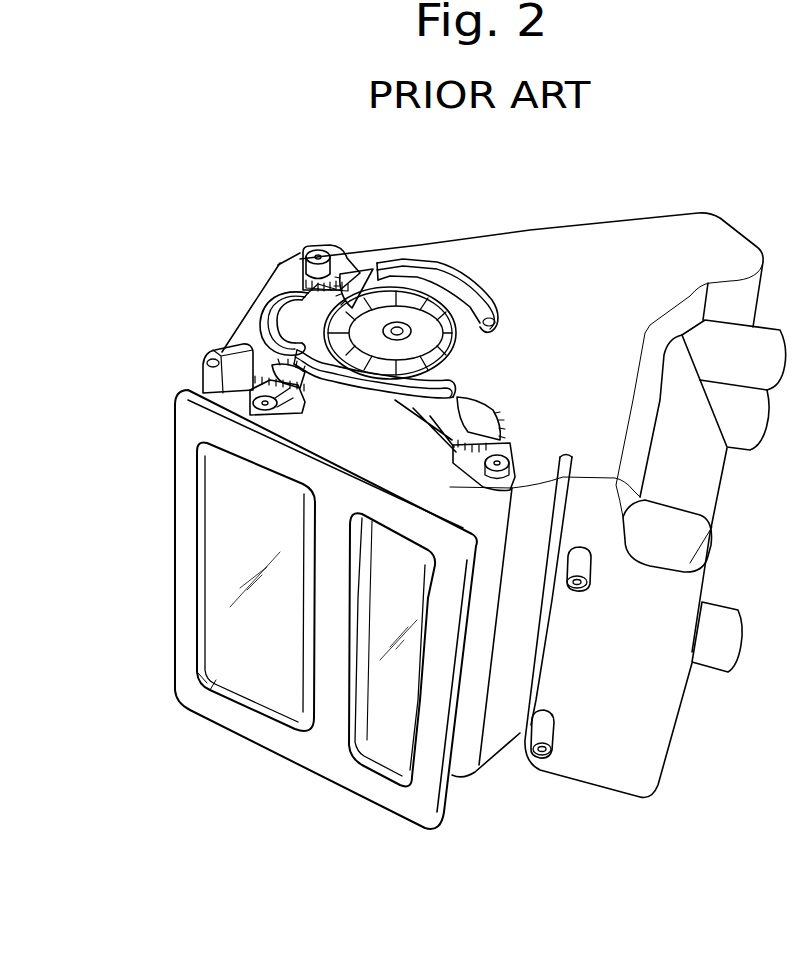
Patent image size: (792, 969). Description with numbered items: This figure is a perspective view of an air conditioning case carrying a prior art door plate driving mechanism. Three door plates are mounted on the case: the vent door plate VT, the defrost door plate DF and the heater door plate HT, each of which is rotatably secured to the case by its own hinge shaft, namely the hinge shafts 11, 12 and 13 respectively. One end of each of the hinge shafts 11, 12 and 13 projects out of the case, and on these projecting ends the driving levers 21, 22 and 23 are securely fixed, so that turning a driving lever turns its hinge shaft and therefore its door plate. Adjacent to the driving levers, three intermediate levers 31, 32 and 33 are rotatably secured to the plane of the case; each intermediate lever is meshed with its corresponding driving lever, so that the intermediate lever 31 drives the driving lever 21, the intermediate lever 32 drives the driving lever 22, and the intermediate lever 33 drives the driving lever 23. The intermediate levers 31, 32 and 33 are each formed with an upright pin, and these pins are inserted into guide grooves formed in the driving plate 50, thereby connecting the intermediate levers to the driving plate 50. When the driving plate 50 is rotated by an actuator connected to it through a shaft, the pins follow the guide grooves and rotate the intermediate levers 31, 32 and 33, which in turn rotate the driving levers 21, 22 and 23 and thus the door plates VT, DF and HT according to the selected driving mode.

The hinge shaft 11 is at (203, 394).
The hinge shaft 12 is at (493, 463).
The hinge shaft 13 is at (300, 250).
The driving lever 21 is at (305, 413).
The driving lever 22 is at (700, 515).
The driving lever 23 is at (343, 256).
The intermediate lever 31 is at (272, 363).
The intermediate lever 32 is at (478, 418).
The intermediate lever 33 is at (373, 270).
The driving plate 50 is at (515, 322).
The heater door plate HT is at (557, 270).
The vent door plate VT is at (218, 566).
The defrost door plate DF is at (390, 745).